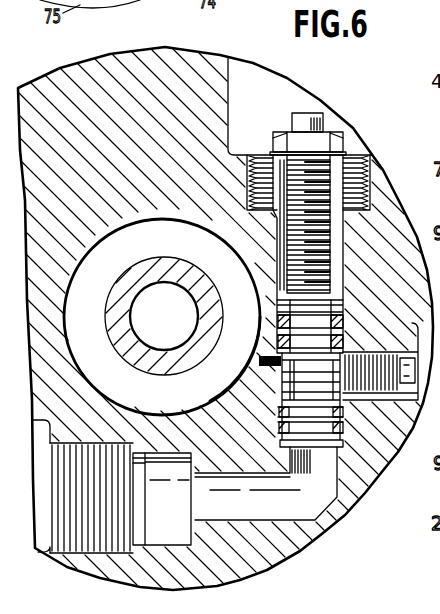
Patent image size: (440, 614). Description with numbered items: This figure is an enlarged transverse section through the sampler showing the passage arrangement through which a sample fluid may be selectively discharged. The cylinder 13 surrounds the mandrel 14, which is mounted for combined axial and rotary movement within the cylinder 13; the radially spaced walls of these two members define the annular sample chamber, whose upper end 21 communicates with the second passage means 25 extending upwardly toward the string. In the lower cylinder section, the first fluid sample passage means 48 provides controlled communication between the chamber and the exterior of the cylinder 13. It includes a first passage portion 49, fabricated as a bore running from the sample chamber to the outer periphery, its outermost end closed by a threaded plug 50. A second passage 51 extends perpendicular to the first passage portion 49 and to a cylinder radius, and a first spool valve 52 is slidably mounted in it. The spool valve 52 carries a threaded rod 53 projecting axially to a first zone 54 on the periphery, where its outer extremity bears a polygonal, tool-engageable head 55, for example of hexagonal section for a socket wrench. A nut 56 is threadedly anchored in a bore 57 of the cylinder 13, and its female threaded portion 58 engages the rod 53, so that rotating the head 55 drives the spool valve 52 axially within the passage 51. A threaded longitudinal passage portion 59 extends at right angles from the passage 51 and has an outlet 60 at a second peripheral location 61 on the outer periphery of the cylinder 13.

The cylinder 13 is at (62, 92).
The mandrel 14 is at (144, 268).
The upper end of sample chamber 21 is at (101, 286).
The second passage means 25 is at (173, 315).
The first fluid sample passage means 48 is at (338, 91).
The first passage portion 49 is at (251, 384).
The threaded plug 50 is at (378, 402).
The second passage 51 is at (278, 268).
The first spool valve 52 is at (282, 309).
The threaded rod 53 is at (287, 248).
The first zone 54 is at (229, 110).
The head 55 is at (340, 140).
The nut 56 is at (357, 157).
The bore 57 is at (253, 160).
The female threaded portion 58 is at (258, 192).
The threaded longitudinal passage portion 59 is at (276, 513).
The outlet 60 is at (104, 518).
The second peripheral location 61 is at (42, 524).